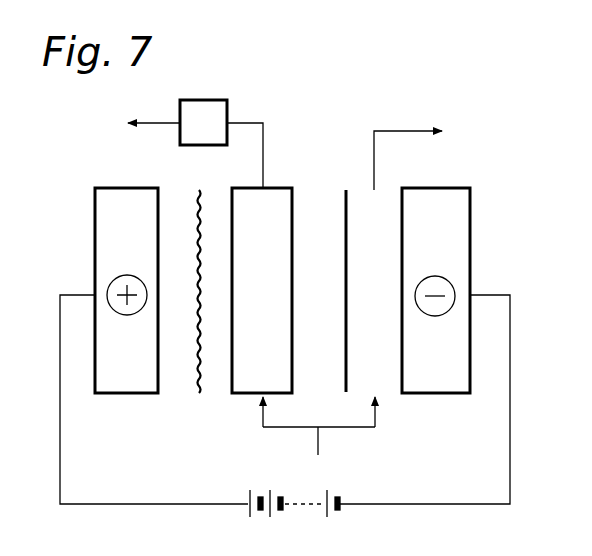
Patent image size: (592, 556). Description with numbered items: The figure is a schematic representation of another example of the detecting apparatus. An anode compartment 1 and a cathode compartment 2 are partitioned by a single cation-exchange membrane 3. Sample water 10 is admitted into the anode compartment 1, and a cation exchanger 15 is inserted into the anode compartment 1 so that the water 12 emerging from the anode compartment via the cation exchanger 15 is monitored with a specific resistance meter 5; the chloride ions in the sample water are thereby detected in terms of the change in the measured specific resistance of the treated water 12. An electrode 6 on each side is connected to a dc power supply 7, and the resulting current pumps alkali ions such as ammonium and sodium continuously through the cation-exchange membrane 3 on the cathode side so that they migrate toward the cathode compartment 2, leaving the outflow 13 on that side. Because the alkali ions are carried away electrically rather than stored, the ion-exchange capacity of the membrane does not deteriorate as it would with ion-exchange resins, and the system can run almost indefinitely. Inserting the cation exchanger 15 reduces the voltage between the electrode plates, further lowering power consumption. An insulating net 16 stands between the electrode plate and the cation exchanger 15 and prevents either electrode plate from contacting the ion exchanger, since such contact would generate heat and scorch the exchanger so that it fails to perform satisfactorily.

The anode compartment 1 is at (275, 317).
The cathode compartment 2 is at (378, 380).
The cation-exchange membrane 3 is at (346, 206).
The specific resistance meter 5 is at (180, 132).
The electrode 6 is at (95, 226).
The dc power supply 7 is at (246, 500).
The sample water 10 is at (316, 447).
The water 12 is at (266, 132).
The outlet 13 is at (374, 158).
The cation exchanger 15 is at (232, 393).
The insulating net 16 is at (197, 372).